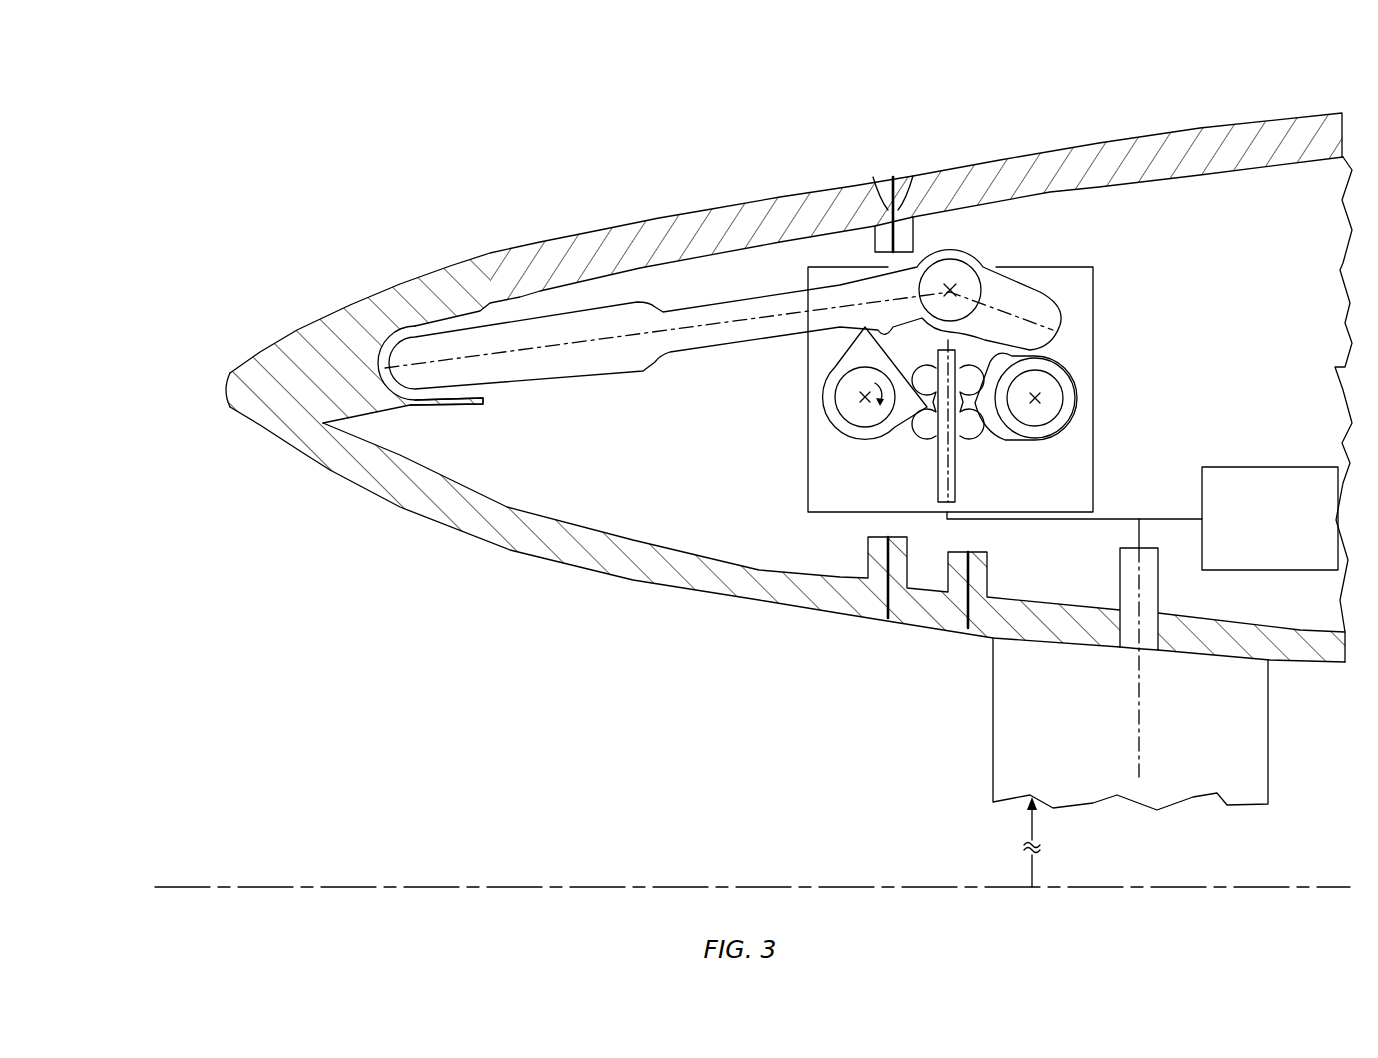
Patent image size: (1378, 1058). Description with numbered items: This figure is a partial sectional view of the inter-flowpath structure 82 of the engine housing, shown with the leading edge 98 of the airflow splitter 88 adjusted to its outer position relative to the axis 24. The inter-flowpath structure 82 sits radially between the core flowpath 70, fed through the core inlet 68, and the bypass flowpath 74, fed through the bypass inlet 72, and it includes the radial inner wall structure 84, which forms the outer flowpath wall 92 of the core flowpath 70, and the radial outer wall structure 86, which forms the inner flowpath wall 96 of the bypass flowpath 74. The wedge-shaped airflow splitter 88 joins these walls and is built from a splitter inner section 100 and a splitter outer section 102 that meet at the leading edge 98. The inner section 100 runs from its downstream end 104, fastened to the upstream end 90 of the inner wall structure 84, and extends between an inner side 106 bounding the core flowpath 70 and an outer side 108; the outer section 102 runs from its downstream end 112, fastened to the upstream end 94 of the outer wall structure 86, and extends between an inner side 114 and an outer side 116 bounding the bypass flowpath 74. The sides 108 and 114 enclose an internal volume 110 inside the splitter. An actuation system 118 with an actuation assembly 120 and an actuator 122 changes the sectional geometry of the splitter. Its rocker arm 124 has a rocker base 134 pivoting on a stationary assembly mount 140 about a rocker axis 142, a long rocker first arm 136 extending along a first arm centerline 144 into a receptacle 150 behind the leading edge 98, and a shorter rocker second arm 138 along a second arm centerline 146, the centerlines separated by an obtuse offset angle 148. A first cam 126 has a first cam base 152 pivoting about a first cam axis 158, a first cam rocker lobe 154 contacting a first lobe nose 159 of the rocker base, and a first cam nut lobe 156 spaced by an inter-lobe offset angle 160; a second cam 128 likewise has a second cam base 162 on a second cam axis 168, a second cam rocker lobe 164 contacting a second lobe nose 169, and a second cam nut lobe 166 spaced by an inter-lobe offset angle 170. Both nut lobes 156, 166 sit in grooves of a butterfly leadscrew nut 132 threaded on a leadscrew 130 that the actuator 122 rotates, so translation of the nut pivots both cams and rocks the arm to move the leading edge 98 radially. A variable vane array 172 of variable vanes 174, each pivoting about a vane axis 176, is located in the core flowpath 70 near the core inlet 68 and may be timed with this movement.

The axis 24 is at (183, 885).
The core inlet 68 is at (205, 650).
The core flowpath 70 is at (636, 794).
The bypass inlet 72 is at (228, 78).
The bypass flowpath 74 is at (697, 76).
The inter-flowpath structure 82 is at (232, 205).
The inner wall structure 84 is at (792, 584).
The outer wall structure 86 is at (791, 349).
The airflow splitter 88 is at (396, 222).
The upstream end of the inner wall structure 90 is at (953, 620).
The outer flowpath wall 92 is at (1305, 676).
The upstream end of the outer wall structure 94 is at (874, 177).
The inner flowpath wall 96 is at (1106, 126).
The leading edge 98 is at (227, 392).
The splitter inner section 100 is at (553, 540).
The splitter outer section 102 is at (586, 244).
The downstream end of the splitter inner section 104 is at (903, 628).
The inner side of the splitter inner section 106 is at (666, 592).
The outer side of the splitter inner section 108 is at (632, 525).
The internal volume 110 is at (630, 431).
The downstream end of the splitter outer section 112 is at (910, 177).
The inner side of the splitter outer section 114 is at (695, 350).
The outer side of the splitter outer section 116 is at (672, 212).
The actuation system 118 is at (1218, 372).
The actuation assembly 120 is at (1082, 290).
The actuator 122 is at (1270, 518).
The rocker arm 124 is at (982, 243).
The first cam 126 is at (815, 418).
The second cam 128 is at (1086, 416).
The leadscrew 130 is at (970, 480).
The leadscrew nut 132 is at (933, 502).
The rocker base 134 is at (953, 250).
The rocker first arm 136 is at (693, 345).
The rocker second arm 138 is at (1067, 265).
The assembly mount 140 is at (1097, 500).
The rocker axis 142 is at (995, 282).
The first arm centerline 144 is at (540, 352).
The second arm centerline 146 is at (1070, 307).
The offset angle 148 is at (940, 345).
The receptacle 150 is at (427, 405).
The first cam base 152 is at (852, 432).
The first cam rocker lobe 154 is at (838, 345).
The first cam nut lobe 156 is at (890, 433).
The first cam axis 158 is at (828, 393).
The first lobe nose 159 is at (885, 305).
The inter-lobe offset angle 160 is at (862, 415).
The second cam base 162 is at (1062, 433).
The second cam rocker lobe 164 is at (1057, 340).
The second cam nut lobe 166 is at (987, 432).
The second cam axis 168 is at (1067, 400).
The second lobe nose 169 is at (1050, 363).
The inter-lobe offset angle 170 is at (1050, 380).
The variable vane array 172 is at (962, 783).
The variable vane 174 is at (1097, 803).
The vane axis 176 is at (1140, 777).